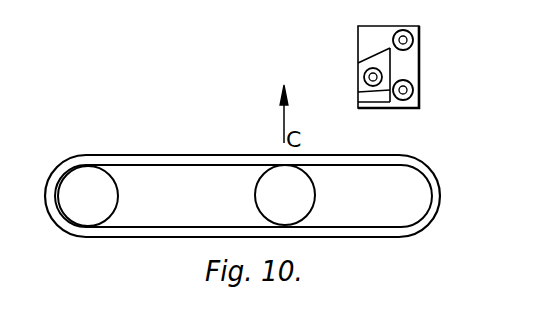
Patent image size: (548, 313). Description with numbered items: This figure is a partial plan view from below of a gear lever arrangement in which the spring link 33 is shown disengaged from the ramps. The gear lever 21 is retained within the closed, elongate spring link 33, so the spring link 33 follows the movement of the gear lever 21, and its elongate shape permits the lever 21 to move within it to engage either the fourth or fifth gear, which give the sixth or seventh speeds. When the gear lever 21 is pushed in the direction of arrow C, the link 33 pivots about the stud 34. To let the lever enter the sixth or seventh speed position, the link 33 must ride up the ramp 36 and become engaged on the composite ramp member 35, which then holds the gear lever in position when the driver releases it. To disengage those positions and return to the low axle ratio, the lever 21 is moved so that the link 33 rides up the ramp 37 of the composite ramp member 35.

The gear lever 21 is at (303, 196).
The spring link 33 is at (437, 188).
The stud 34 is at (85, 180).
The composite ramp member 35 is at (394, 84).
The ramp 36 is at (371, 101).
The ramp 37 is at (367, 60).